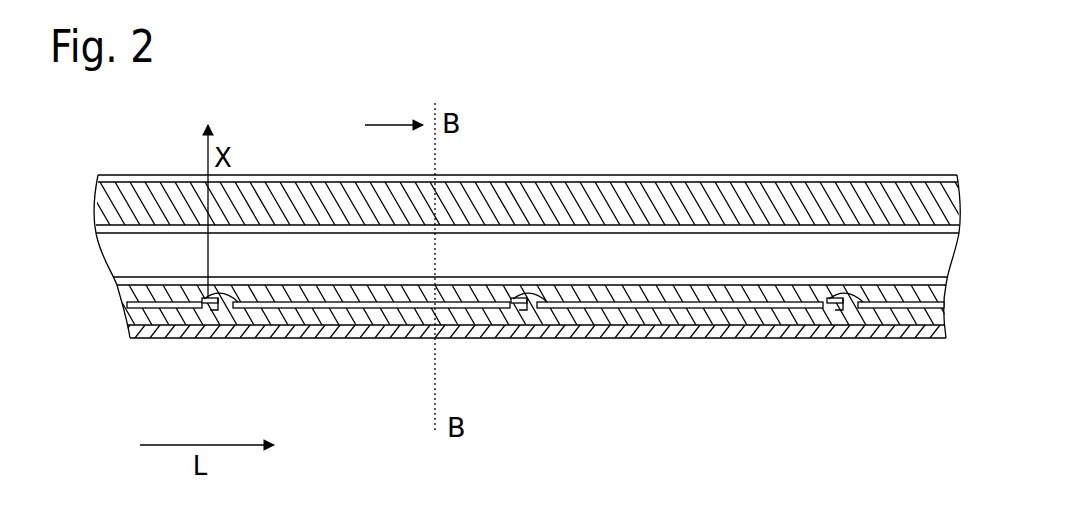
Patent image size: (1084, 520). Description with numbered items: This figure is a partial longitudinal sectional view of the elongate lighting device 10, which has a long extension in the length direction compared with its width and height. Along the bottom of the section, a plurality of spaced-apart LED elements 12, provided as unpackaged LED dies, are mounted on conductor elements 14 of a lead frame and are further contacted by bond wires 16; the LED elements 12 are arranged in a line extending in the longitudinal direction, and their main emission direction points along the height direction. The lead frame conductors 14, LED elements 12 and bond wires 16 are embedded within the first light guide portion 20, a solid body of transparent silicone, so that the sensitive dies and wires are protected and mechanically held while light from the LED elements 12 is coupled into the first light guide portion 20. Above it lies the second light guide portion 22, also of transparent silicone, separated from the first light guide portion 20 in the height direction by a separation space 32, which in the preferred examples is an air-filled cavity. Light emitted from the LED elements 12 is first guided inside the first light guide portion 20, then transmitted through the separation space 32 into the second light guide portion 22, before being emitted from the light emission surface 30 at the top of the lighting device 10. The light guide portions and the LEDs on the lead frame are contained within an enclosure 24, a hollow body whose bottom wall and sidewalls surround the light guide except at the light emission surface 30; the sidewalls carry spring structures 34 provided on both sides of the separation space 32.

The lighting device 10 is at (683, 133).
The LED element 12 is at (206, 300).
The conductor element 14 is at (347, 310).
The bond wire 16 is at (222, 304).
The first light guide portion 20 is at (707, 340).
The second light guide portion 22 is at (755, 205).
The enclosure 24 is at (128, 332).
The light emission surface 30 is at (577, 165).
The separation space 32 is at (312, 268).
The spring structure 34 is at (634, 257).